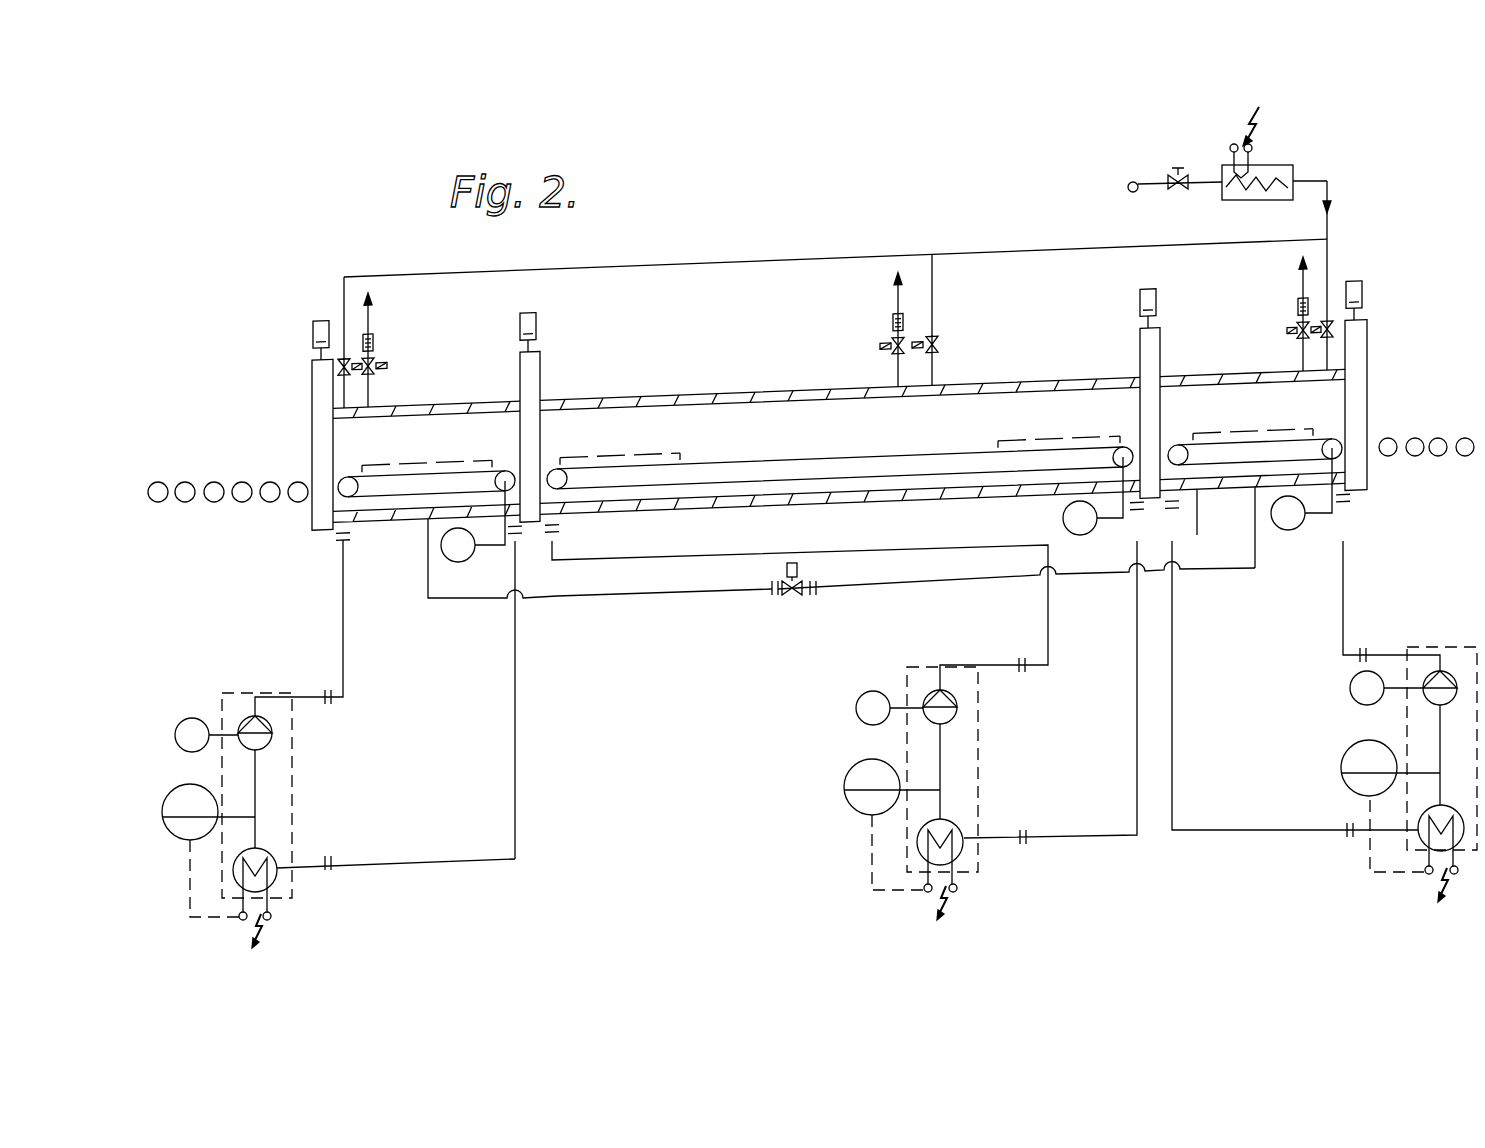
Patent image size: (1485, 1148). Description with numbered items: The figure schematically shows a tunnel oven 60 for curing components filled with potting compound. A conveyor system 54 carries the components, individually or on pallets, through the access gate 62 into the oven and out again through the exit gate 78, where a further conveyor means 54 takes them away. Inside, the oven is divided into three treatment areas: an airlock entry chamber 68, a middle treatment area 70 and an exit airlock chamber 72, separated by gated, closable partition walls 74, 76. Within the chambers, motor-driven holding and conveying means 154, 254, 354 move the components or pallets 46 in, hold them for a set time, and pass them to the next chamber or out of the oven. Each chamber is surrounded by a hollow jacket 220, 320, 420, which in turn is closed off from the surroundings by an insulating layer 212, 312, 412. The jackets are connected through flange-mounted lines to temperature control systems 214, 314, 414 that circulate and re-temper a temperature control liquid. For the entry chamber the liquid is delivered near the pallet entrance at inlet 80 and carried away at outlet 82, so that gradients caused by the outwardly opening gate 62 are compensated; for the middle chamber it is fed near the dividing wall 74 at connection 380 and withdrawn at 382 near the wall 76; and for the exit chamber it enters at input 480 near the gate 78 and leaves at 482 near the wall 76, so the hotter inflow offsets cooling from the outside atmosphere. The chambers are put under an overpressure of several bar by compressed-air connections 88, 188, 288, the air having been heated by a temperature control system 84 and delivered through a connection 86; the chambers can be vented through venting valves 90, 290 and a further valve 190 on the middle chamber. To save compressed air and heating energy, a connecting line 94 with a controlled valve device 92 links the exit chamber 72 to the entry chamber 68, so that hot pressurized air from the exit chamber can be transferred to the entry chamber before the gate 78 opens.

The laminate workpiece 46 is at (400, 467).
The conveyor system 54 is at (215, 503).
The tunnel oven 60 is at (787, 240).
The access gate 62 is at (315, 397).
The airlock entry chamber 68 is at (343, 443).
The treatment area 70 is at (685, 418).
The exit airlock chamber 72 is at (1325, 423).
The partition wall 74 is at (538, 375).
The partition wall 76 is at (1142, 353).
The exit gate 78 is at (1360, 338).
The temperature control medium inlet 80 is at (342, 555).
The temperature control medium outlet 82 is at (518, 548).
The temperature control system 84 is at (1236, 200).
The connection 86 is at (1133, 182).
The compressed-air connection 88 is at (343, 300).
The venting valve 90 is at (375, 345).
The controlled valve device 92 is at (800, 592).
The connecting line 94 is at (705, 593).
The holding and conveying means 154 is at (473, 478).
The compressed-air connection 188 is at (935, 302).
The vent valve 190 is at (893, 318).
The insulating layer 212 is at (413, 522).
The temperature control system 214 is at (295, 785).
The hollow jacket 220 is at (370, 523).
The holding and conveying means 254 is at (857, 463).
The compressed-air connection 288 is at (1330, 262).
The venting valve 290 is at (1297, 302).
The insulating layer 312 is at (607, 518).
The heat control system 314 is at (978, 770).
The hollow jacket 320 is at (680, 502).
The holding and conveying means 354 is at (1285, 430).
The return line 380 is at (553, 553).
The temperature control liquid withdrawal 382 is at (1133, 532).
The insulating layer 412 is at (1229, 500).
The temperature control system 414 is at (1405, 718).
The hollow jacket 420 is at (1222, 527).
The temperature control liquid input 480 is at (1347, 530).
The temperature control liquid outlet 482 is at (1172, 540).